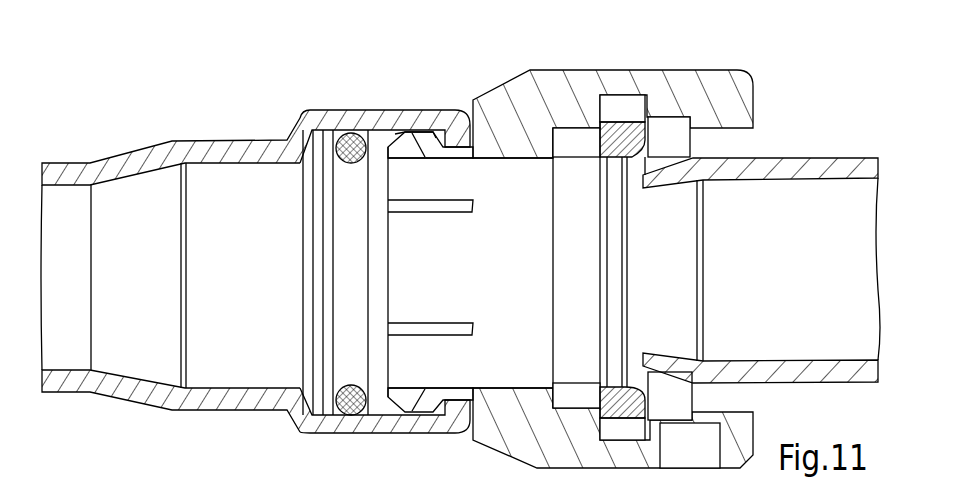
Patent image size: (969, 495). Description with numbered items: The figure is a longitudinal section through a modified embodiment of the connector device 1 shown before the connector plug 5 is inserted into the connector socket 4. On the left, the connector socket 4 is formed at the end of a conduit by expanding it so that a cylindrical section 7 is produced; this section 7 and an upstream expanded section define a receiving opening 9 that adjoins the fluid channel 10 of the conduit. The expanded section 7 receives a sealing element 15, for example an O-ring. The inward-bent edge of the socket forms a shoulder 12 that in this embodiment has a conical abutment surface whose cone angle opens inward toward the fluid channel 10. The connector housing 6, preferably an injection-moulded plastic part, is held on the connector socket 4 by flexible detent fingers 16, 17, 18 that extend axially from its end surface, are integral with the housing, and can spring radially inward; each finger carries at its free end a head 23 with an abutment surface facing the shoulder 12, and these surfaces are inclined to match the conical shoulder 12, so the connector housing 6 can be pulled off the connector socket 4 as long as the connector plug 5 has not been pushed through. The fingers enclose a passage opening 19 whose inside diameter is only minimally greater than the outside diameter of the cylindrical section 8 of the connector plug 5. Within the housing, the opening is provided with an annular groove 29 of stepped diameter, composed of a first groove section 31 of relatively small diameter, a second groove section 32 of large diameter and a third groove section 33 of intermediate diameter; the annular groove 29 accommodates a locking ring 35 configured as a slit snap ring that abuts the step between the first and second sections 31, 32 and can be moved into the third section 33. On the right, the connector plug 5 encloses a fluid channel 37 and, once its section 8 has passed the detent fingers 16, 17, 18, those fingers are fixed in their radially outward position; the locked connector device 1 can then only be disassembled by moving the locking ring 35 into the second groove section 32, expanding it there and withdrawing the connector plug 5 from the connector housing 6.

The connector device 1 is at (460, 247).
The connector socket 4 is at (255, 257).
The connector plug 5 is at (761, 217).
The connector housing 6 is at (619, 247).
The cylindrical section 7 is at (338, 110).
The cylindrical section 8 is at (832, 170).
The receiving opening 9 is at (236, 306).
The fluid channel 10 is at (82, 319).
The shoulder 12 is at (454, 416).
The sealing element 15 is at (323, 430).
The detent finger 16 is at (447, 156).
The detent finger 17 is at (441, 287).
The detent finger 18 is at (458, 388).
The passage opening 19 is at (505, 267).
The head 23 is at (418, 150).
The annular groove 29 is at (597, 467).
The first groove section 31 is at (582, 126).
The second groove section 32 is at (623, 96).
The third groove section 33 is at (676, 116).
The locking ring 35 is at (648, 407).
The fluid channel 37 is at (874, 303).